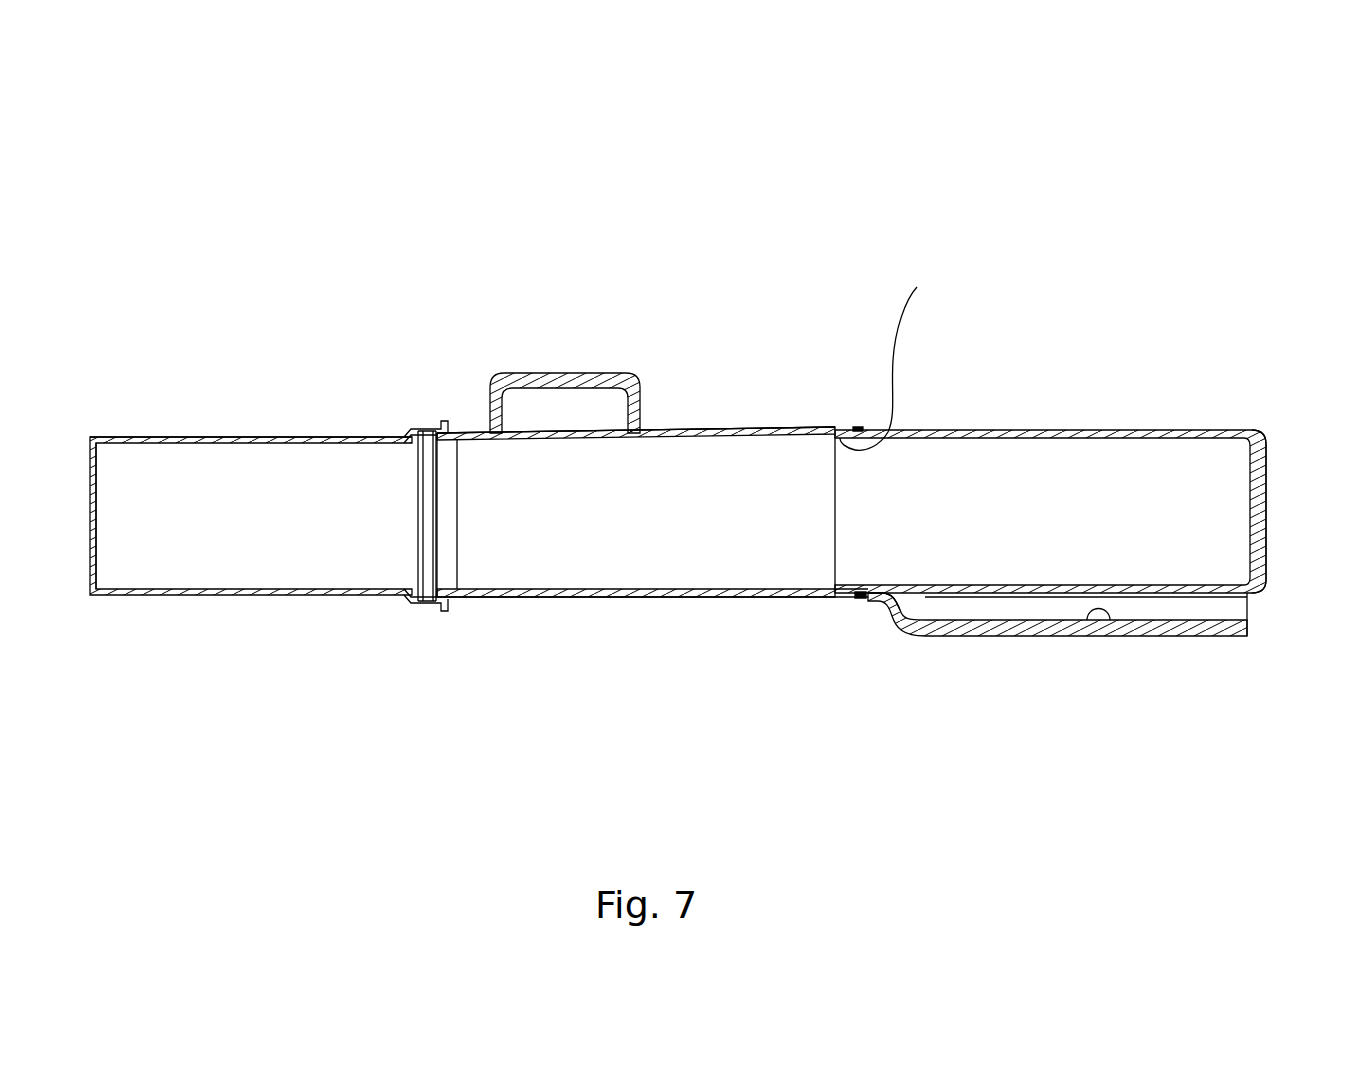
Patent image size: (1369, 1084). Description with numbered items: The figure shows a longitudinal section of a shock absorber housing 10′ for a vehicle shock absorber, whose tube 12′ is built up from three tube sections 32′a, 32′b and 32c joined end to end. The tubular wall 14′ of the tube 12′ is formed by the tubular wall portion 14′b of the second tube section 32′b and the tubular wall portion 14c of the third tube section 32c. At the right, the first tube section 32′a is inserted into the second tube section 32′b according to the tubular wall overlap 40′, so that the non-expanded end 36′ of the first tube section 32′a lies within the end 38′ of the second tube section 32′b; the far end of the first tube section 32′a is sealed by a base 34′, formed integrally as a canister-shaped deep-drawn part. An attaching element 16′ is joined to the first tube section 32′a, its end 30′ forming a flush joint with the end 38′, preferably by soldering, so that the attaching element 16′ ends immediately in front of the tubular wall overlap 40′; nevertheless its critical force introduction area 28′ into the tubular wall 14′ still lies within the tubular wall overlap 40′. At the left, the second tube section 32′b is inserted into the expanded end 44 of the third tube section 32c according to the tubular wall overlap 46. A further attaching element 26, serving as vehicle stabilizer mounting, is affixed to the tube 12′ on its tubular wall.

The shock absorber housing 10′ is at (613, 203).
The tube 12′ is at (770, 416).
The tubular wall 14′ is at (685, 605).
The tubular wall portion 14c is at (262, 438).
The tubular wall portion 14′b is at (697, 431).
The attaching element 16′ is at (970, 631).
The attaching element 26 is at (540, 406).
The force introduction area 28′ is at (840, 605).
The end of the attaching element 30′ is at (873, 600).
The tube section 32c is at (289, 592).
The second tube section 32′b is at (592, 563).
The first tube section 32′a is at (1092, 476).
The base 34′ is at (1265, 470).
The end of the first tube section 36′ is at (888, 356).
The end of the second tube section 38′ is at (838, 598).
The tubular wall overlap 40′ is at (858, 415).
The end of the tube section 44 is at (425, 602).
The tubular wall overlap 46 is at (448, 413).